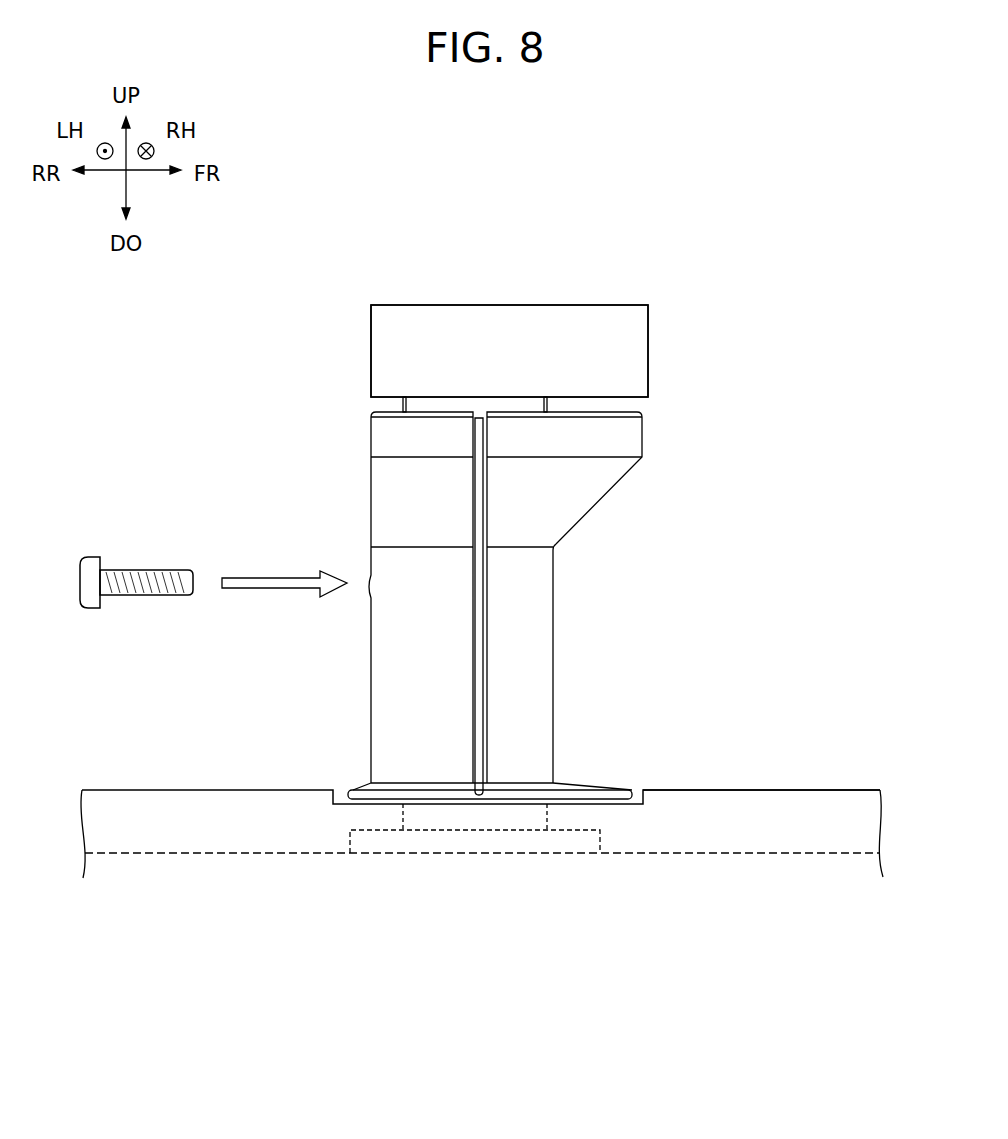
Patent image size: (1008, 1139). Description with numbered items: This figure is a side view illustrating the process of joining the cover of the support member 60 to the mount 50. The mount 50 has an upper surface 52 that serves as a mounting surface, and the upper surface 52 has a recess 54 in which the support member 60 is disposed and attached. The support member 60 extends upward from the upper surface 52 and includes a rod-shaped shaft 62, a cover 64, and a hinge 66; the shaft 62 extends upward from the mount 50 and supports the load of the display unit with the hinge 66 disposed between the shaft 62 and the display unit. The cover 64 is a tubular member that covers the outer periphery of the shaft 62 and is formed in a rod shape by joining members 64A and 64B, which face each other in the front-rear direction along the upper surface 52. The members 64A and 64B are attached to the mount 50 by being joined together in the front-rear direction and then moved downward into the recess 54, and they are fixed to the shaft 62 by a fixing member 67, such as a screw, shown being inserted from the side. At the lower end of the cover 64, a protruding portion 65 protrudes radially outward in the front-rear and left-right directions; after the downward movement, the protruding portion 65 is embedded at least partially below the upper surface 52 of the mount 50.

The mount 50 is at (843, 790).
The upper surface 52 is at (815, 790).
The recess 54 is at (346, 792).
The support member 60 is at (337, 283).
The shaft 62 is at (404, 403).
The cover 64 is at (413, 1025).
The member 64A is at (435, 768).
The member 64B is at (517, 768).
The protruding portion 65 is at (367, 783).
The hinge 66 is at (648, 335).
The fixing member 67 is at (130, 570).